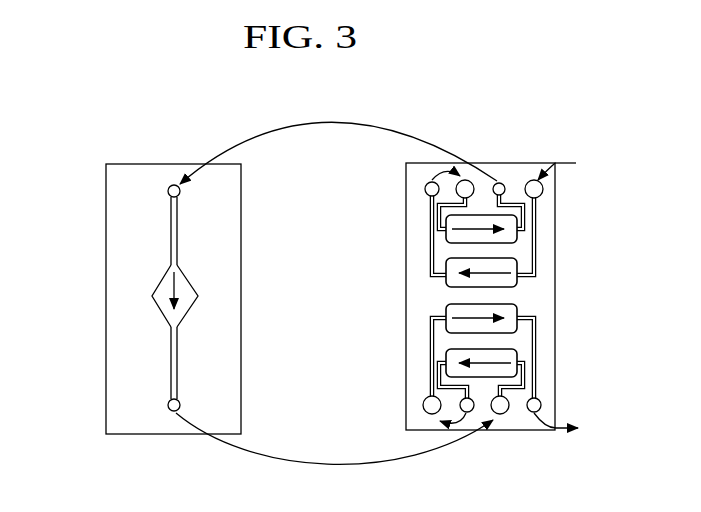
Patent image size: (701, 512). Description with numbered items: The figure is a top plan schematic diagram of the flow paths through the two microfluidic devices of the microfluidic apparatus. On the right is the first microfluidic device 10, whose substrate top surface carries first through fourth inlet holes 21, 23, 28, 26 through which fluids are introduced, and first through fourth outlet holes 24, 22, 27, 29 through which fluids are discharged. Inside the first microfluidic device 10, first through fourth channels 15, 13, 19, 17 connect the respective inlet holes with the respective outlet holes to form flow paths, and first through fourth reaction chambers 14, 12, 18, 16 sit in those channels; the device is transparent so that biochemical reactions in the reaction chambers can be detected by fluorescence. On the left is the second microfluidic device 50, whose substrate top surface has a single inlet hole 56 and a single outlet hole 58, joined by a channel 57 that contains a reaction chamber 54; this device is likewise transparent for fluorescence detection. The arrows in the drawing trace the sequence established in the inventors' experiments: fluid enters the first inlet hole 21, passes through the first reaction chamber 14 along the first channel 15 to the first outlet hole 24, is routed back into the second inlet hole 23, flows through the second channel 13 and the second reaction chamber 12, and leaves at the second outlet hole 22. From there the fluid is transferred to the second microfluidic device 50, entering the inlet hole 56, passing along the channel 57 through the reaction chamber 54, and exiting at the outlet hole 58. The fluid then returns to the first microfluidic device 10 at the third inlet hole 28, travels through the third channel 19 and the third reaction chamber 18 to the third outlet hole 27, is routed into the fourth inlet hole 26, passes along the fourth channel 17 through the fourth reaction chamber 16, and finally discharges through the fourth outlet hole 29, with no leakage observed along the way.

The first microfluidic device 10 is at (566, 192).
The second reaction chamber 12 is at (510, 237).
The second channel 13 is at (440, 217).
The first reaction chamber 14 is at (510, 282).
The first channel 15 is at (430, 260).
The fourth reaction chamber 16 is at (510, 325).
The fourth channel 17 is at (430, 336).
The third reaction chamber 18 is at (510, 370).
The third channel 19 is at (440, 374).
The first inlet hole 21 is at (534, 179).
The second outlet hole 22 is at (499, 182).
The second inlet hole 23 is at (465, 179).
The first outlet hole 24 is at (432, 181).
The fourth inlet hole 26 is at (432, 415).
The third outlet hole 27 is at (467, 413).
The third inlet hole 28 is at (500, 415).
The fourth outlet hole 29 is at (534, 413).
The second microfluidic device 50 is at (103, 242).
The reaction chamber 54 is at (152, 296).
The inlet hole 56 is at (168, 191).
The channel 57 is at (170, 367).
The outlet hole 58 is at (168, 405).